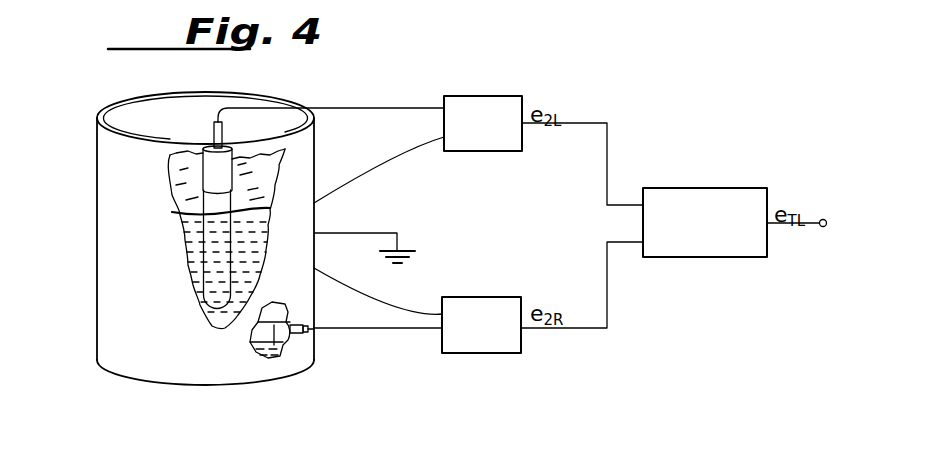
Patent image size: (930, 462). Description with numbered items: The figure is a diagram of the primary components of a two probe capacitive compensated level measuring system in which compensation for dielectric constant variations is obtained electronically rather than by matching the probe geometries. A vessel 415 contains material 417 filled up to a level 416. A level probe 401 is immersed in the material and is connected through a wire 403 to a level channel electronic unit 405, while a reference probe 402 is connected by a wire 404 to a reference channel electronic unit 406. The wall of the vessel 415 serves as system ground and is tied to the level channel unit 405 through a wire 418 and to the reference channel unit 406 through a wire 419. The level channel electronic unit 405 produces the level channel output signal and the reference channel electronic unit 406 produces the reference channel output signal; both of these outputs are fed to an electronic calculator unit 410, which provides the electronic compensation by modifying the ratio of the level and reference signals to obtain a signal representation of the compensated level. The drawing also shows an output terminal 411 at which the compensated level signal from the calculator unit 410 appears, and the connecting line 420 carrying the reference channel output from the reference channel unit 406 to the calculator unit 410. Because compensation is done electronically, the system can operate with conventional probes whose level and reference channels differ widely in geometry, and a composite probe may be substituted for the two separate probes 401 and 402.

The level probe 401 is at (212, 162).
The reference probe 402 is at (278, 356).
The wire 403 is at (383, 105).
The wire 404 is at (395, 330).
The level channel electronic unit 405 is at (493, 107).
The reference channel electronic unit 406 is at (485, 340).
The electronic calculator unit 410 is at (700, 200).
The output terminal 411 is at (810, 218).
The vessel 415 is at (124, 323).
The level 416 is at (178, 151).
The material 417 is at (193, 243).
The wire 418 is at (414, 149).
The wire 419 is at (404, 305).
The lead line 420 is at (595, 329).